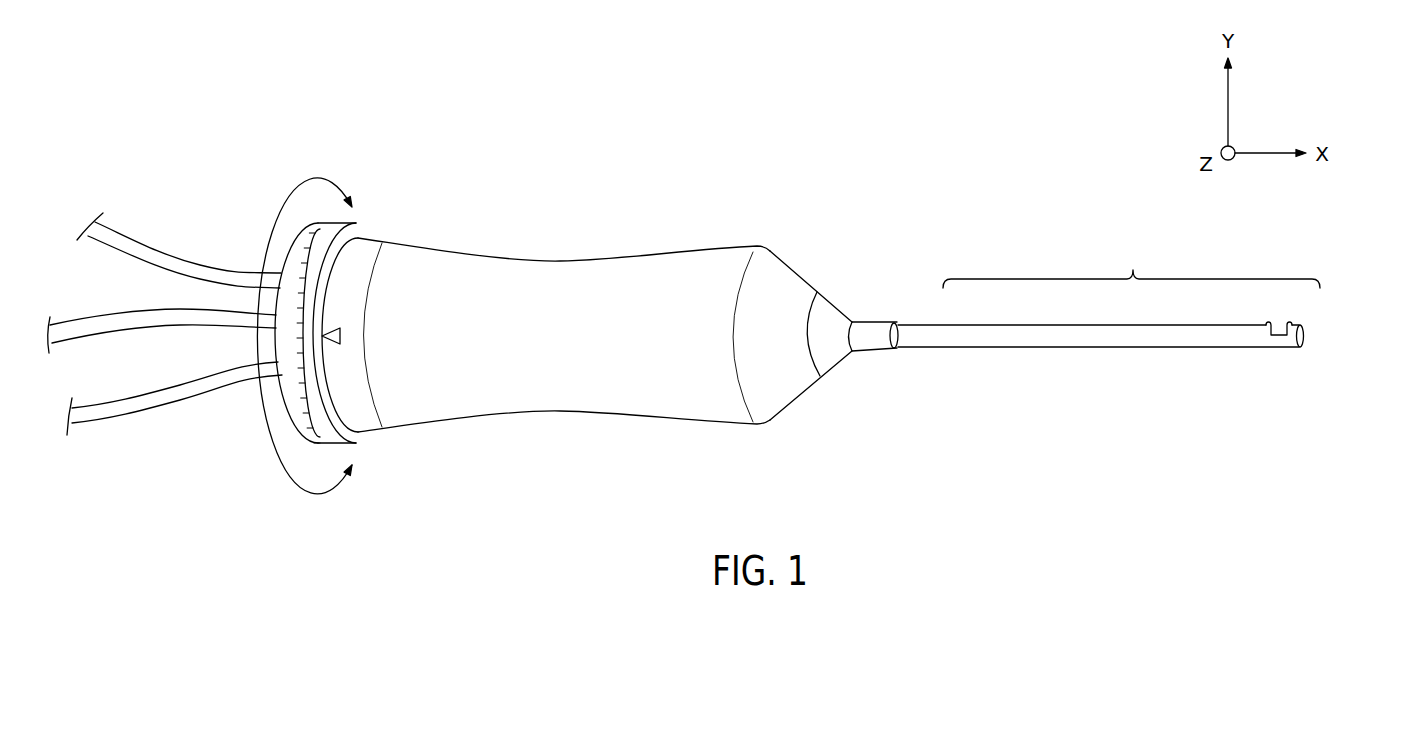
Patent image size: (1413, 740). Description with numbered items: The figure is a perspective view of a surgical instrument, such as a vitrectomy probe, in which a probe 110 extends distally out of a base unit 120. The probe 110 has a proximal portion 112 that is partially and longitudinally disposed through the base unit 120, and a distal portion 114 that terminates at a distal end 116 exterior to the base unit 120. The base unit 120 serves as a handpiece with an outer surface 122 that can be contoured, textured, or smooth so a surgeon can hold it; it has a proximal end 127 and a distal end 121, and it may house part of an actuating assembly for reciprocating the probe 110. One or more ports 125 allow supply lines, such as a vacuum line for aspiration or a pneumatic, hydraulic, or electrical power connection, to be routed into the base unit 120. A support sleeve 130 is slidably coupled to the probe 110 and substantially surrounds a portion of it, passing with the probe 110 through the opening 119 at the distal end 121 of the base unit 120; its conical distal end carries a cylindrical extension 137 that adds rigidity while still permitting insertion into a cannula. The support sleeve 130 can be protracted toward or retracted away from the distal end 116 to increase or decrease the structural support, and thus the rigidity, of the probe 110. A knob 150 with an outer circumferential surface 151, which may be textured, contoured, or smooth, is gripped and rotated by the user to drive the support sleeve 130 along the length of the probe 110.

The probe 110 is at (1131, 264).
The proximal portion 112 is at (988, 338).
The distal portion 114 is at (1282, 323).
The distal end 116 is at (1304, 334).
The opening 119 is at (845, 354).
The base unit 120 is at (510, 365).
The distal end 121 is at (805, 410).
The outer surface 122 is at (595, 421).
The port 125 is at (288, 422).
The proximal end 127 is at (247, 410).
The support sleeve 130 is at (840, 296).
The cylindrical extension 137 is at (878, 317).
The knob 150 is at (298, 272).
The outer circumferential surface 151 is at (323, 216).